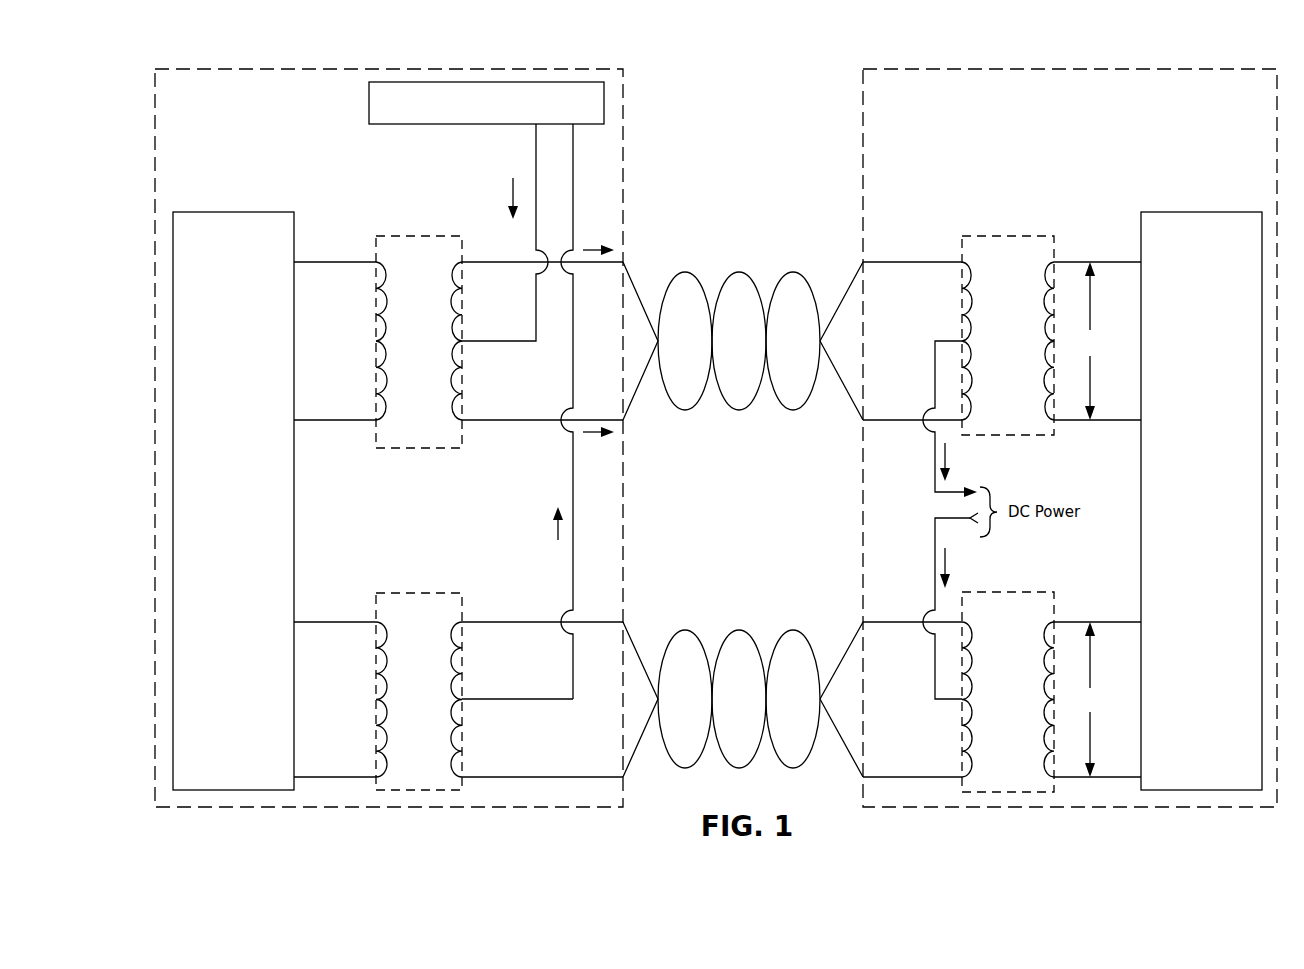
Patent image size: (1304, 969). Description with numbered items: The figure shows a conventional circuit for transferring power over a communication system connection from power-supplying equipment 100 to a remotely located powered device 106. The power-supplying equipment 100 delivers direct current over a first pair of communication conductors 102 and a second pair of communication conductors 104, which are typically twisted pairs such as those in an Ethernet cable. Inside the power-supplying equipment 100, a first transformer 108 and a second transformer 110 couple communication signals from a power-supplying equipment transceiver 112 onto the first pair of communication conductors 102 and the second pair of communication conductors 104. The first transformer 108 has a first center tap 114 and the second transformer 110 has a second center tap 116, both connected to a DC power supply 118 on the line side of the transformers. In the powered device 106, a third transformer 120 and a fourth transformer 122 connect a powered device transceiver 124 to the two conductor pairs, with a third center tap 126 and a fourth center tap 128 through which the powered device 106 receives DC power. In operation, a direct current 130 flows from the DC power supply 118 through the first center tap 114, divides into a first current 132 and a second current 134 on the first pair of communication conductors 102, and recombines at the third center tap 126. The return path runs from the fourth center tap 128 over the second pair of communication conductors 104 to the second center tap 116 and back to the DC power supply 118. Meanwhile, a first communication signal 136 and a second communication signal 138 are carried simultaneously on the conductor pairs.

The power-supplying equipment 100 is at (537, 53).
The first pair of communication conductors 102 is at (742, 272).
The second pair of communication conductors 104 is at (738, 630).
The powered device 106 is at (1155, 53).
The first transformer 108 is at (455, 258).
The second transformer 110 is at (455, 615).
The power-supplying equipment transceiver 112 is at (274, 501).
The first center tap 114 is at (487, 305).
The second center tap 116 is at (475, 662).
The DC power supply 118 is at (486, 103).
The third transformer 120 is at (1043, 258).
The fourth transformer 122 is at (1043, 615).
The powered device transceiver 124 is at (1158, 501).
The third center tap 126 is at (927, 317).
The fourth center tap 128 is at (922, 722).
The direct current 130 is at (479, 184).
The first current 132 is at (598, 222).
The second current 134 is at (598, 470).
The first communication signal 136 is at (1090, 341).
The second communication signal 138 is at (1090, 699).